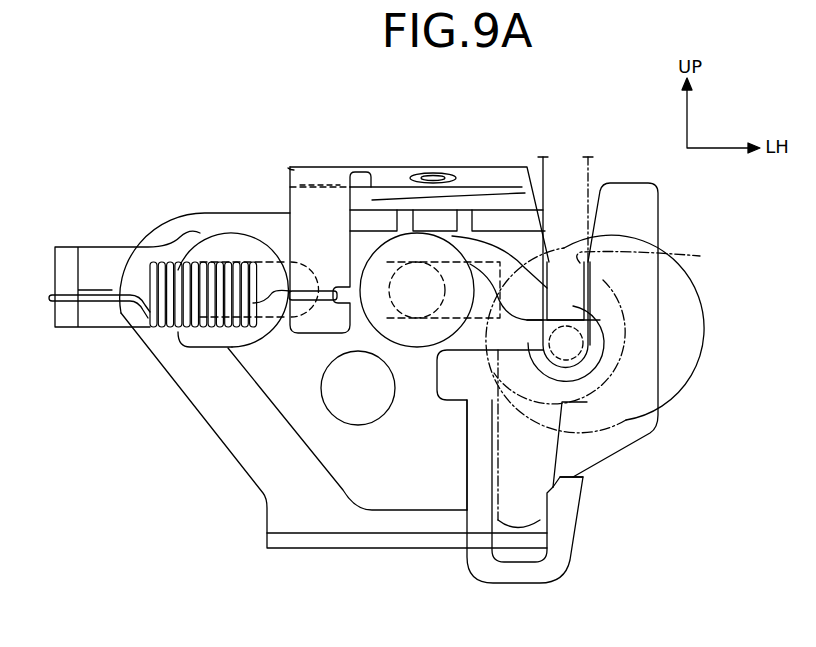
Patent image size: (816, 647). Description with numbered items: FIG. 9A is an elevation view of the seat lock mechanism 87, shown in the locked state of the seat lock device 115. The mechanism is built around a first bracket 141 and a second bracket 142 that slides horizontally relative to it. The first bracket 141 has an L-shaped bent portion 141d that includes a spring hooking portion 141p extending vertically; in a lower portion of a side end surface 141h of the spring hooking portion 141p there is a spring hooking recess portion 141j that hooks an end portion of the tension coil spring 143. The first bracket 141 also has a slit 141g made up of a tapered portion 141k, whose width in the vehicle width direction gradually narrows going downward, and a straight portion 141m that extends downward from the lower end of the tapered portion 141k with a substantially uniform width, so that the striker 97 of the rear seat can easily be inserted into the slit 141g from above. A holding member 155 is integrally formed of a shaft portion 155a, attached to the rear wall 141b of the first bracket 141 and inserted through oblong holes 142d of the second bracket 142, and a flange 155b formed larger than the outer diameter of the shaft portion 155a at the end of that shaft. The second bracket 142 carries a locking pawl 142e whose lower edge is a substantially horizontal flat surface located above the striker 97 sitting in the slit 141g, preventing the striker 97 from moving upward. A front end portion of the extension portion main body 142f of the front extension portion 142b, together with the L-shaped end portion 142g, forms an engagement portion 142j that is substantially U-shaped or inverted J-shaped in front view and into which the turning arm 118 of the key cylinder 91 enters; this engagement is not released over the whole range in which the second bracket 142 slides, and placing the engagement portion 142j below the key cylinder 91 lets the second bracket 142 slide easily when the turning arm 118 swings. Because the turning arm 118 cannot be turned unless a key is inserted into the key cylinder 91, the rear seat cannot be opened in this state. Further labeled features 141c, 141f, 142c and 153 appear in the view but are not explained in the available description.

The seat lock mechanism 87 is at (163, 206).
The key cylinder 91 is at (670, 310).
The striker 97 is at (580, 382).
The seat lock device 115 is at (604, 152).
The turning arm 118 is at (515, 588).
The first bracket 141 is at (287, 170).
The rear wall 141b is at (248, 446).
The bottom flange 141c is at (283, 538).
The L-shaped bent portion 141d is at (316, 196).
The boss portion 141f is at (467, 168).
The slit 141g is at (538, 206).
The side end surface 141h is at (360, 171).
The spring hooking recess portion 141j is at (403, 212).
The tapered portion 141k is at (596, 200).
The straight portion 141m is at (692, 252).
The spring hooking portion 141p is at (290, 167).
The second bracket 142 is at (337, 488).
The front extension portion 142b is at (460, 518).
The lever end block 142c is at (68, 262).
The oblong holes 142d is at (513, 208).
The locking pawl 142e is at (603, 303).
The extension portion main body 142f is at (447, 478).
The L-shaped end portion 142g is at (575, 521).
The engagement portion 142j is at (566, 582).
The tension coil spring 143 is at (200, 330).
The screw 153 is at (381, 186).
The holding member 155 is at (187, 240).
The shaft portion 155a is at (160, 300).
The flange 155b is at (220, 232).